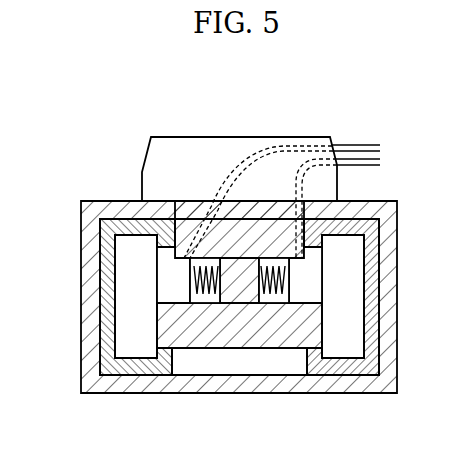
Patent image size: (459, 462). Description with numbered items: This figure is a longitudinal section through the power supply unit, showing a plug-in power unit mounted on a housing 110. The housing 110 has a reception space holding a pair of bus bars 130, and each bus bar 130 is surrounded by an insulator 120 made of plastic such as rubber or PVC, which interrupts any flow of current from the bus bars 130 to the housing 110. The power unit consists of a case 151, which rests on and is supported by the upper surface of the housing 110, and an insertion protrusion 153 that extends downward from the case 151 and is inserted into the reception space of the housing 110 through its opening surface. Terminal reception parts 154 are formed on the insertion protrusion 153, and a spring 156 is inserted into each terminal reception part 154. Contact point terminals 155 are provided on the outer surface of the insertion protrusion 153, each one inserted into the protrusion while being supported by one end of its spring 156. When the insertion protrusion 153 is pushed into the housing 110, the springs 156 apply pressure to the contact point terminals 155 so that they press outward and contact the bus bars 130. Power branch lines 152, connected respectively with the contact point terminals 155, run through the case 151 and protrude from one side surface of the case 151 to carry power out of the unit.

The housing 110 is at (135, 383).
The insulator 120 is at (107, 305).
The bus bar 130 is at (128, 273).
The case 151 is at (220, 137).
The power branch line 152 is at (368, 143).
The insertion protrusion 153 is at (233, 335).
The terminal reception part 154 is at (190, 265).
The contact point terminal 155 is at (170, 300).
The spring 156 is at (205, 305).